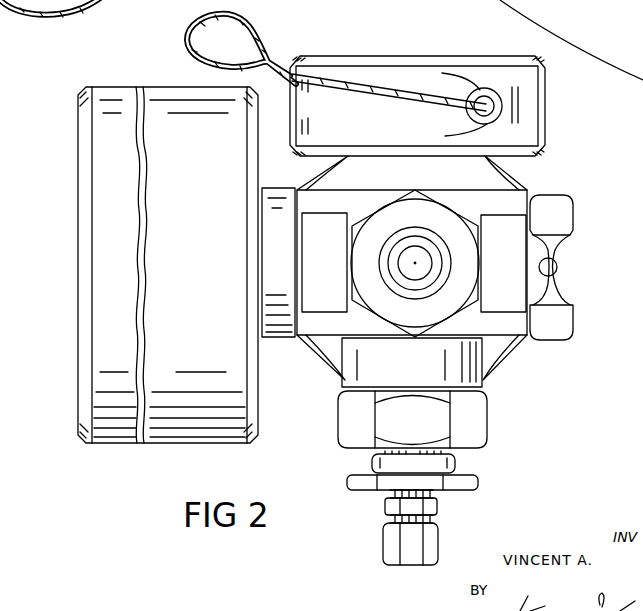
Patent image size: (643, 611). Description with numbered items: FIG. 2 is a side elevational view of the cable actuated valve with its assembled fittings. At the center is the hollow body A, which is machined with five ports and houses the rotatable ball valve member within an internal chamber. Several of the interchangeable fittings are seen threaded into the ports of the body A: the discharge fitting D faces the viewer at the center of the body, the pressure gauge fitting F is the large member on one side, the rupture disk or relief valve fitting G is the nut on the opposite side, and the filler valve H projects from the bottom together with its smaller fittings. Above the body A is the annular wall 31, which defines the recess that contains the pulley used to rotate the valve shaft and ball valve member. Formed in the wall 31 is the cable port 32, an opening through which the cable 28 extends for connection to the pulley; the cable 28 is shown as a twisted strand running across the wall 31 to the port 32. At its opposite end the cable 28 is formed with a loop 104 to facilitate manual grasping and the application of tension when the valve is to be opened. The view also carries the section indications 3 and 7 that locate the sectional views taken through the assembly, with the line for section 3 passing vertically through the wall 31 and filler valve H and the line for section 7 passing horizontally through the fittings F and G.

The loop 104 is at (252, 20).
The annular wall 31 is at (375, 90).
The cable 28 is at (447, 111).
The cable port 32 is at (486, 90).
The section line 3- 3 is at (415, 88).
The section line 7- 7 is at (120, 260).
The hollow body A is at (533, 183).
The discharge fitting D is at (421, 223).
The pressure gauge fitting F is at (78, 177).
The rupture disk fitting G is at (562, 204).
The filler valve H is at (480, 425).